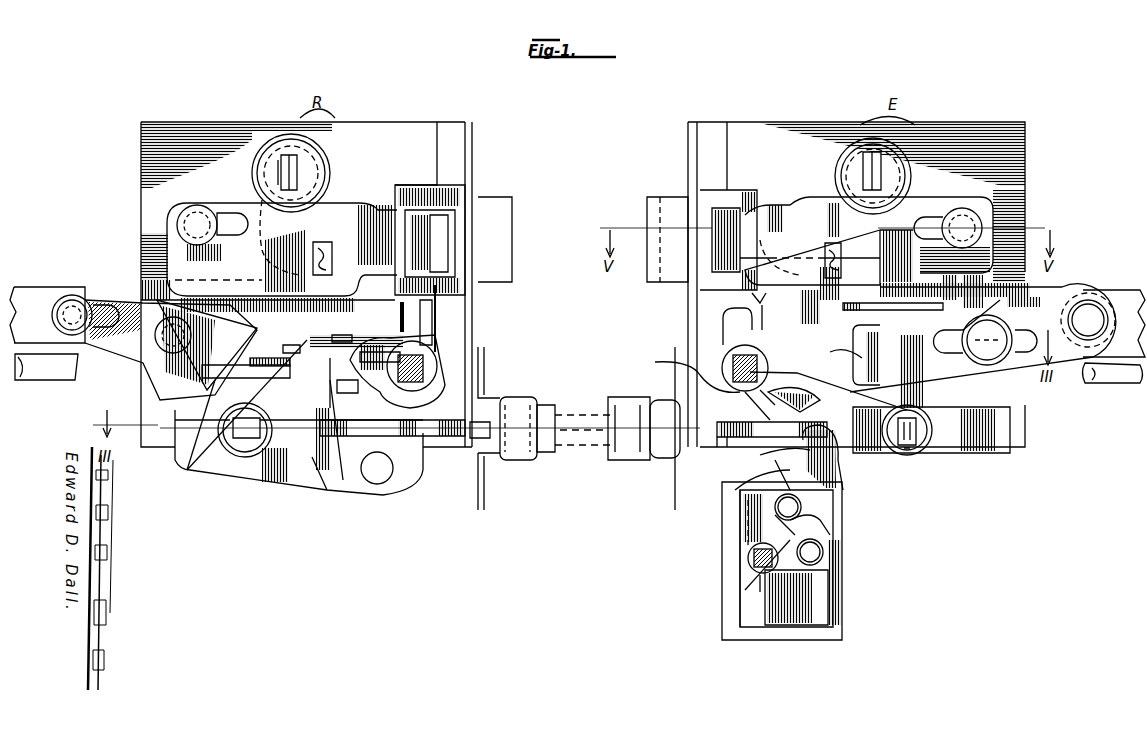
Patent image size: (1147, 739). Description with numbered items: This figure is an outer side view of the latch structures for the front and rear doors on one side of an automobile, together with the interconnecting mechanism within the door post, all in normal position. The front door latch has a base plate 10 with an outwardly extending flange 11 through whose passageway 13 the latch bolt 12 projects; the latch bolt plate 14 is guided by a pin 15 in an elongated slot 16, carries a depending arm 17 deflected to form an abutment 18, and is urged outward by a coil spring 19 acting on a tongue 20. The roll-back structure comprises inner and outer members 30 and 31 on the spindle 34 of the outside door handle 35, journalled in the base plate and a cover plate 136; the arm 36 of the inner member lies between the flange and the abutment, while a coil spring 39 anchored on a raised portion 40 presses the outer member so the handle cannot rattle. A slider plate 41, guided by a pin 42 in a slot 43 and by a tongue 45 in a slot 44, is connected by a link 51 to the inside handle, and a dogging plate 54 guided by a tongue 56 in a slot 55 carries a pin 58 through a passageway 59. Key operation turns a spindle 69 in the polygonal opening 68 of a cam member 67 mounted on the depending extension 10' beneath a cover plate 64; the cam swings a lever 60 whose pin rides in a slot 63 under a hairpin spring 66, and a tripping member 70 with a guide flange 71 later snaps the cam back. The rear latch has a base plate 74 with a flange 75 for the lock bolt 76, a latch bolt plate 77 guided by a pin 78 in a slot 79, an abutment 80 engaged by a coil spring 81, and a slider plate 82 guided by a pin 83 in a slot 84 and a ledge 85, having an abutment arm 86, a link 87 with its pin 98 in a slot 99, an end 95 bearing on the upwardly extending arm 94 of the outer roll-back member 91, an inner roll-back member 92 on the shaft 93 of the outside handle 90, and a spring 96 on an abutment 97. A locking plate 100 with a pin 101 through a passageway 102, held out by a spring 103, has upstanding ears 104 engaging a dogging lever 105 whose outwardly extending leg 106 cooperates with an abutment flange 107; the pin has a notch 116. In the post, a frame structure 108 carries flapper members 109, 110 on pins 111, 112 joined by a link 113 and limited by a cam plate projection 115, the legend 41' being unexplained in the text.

The base plate 10 is at (864, 276).
The depending extension 10' is at (782, 578).
The outwardly extending flange 11 is at (695, 158).
The latch bolt 12 is at (665, 230).
The passageway 13 is at (660, 208).
The latch bolt plate 14 is at (805, 210).
The pin 15 is at (975, 225).
The elongated slot 16 is at (935, 218).
The depending arm 17 is at (822, 275).
The abutment 18 is at (760, 303).
The coil spring 19 is at (910, 172).
The tongue 20 is at (822, 256).
The inner roll-back member 30 is at (815, 422).
The outer roll-back member 31 is at (755, 398).
The spindle 34 is at (725, 360).
The outside door handle 35 is at (1100, 383).
The arm 36 is at (723, 312).
The coil spring 39 is at (908, 456).
The raised portion 40 is at (970, 455).
The slider plate 41 is at (983, 332).
The lever portion 41' is at (940, 318).
The pin 42 is at (1000, 320).
The longitudinally extending slot 43 is at (948, 353).
The longitudinally extending slot 44 is at (930, 312).
The tongue 45 is at (856, 328).
The link 51 is at (1128, 300).
The dogging plate 54 is at (843, 472).
The slot 55 is at (805, 398).
The tongue 56 is at (860, 358).
The pin 58 is at (738, 478).
The passageway 59 is at (720, 440).
The lever 60 is at (775, 462).
The slot 63 is at (832, 540).
The cover plate 64 is at (820, 600).
The hairpin spring 66 is at (824, 566).
The cam member 67 is at (730, 560).
The polygonal opening 68 is at (762, 592).
The spindle 69 is at (745, 590).
The tripping member 70 is at (740, 530).
The guide flange 71 is at (745, 515).
The base plate 74 is at (400, 135).
The flange 75 is at (470, 160).
The lock bolt 76 is at (500, 208).
The latch bolt plate 77 is at (335, 210).
The pin 78 is at (200, 217).
The slot 79 is at (236, 215).
The abutment 80 is at (338, 255).
The coil spring 81 is at (318, 158).
The slider plate 82 is at (128, 355).
The pin 83 is at (162, 322).
The slot 84 is at (290, 345).
The ledge 85 is at (342, 335).
The abutment arm 86 is at (360, 262).
The link 87 is at (30, 292).
The outside handle 90 is at (60, 372).
The outer roll-back member 91 is at (430, 345).
The inner roll-back member 92 is at (440, 320).
The shaft 93 is at (425, 365).
The upwardly extending arm 94 is at (436, 305).
The end 95 is at (383, 352).
The spring 96 is at (250, 458).
The abutment 97 is at (312, 345).
The pin 98 is at (72, 298).
The slot 99 is at (108, 305).
The locking plate 100 is at (308, 475).
The pin 101 is at (476, 442).
The passageway 102 is at (448, 418).
The spring 103 is at (370, 485).
The upstanding ears 104 is at (192, 466).
The dogging lever 105 is at (170, 385).
The outwardly extending leg 106 is at (232, 378).
The abutment flange 107 is at (282, 353).
The frame structure 108 is at (486, 490).
The flapper member 109 is at (620, 405).
The flapper member 110 is at (510, 405).
The pin 111 is at (655, 404).
The pin 112 is at (545, 405).
The link 113 is at (580, 412).
The cam plate projection 115 is at (668, 465).
The notch 116 is at (400, 470).
The cover plate 136 is at (655, 362).